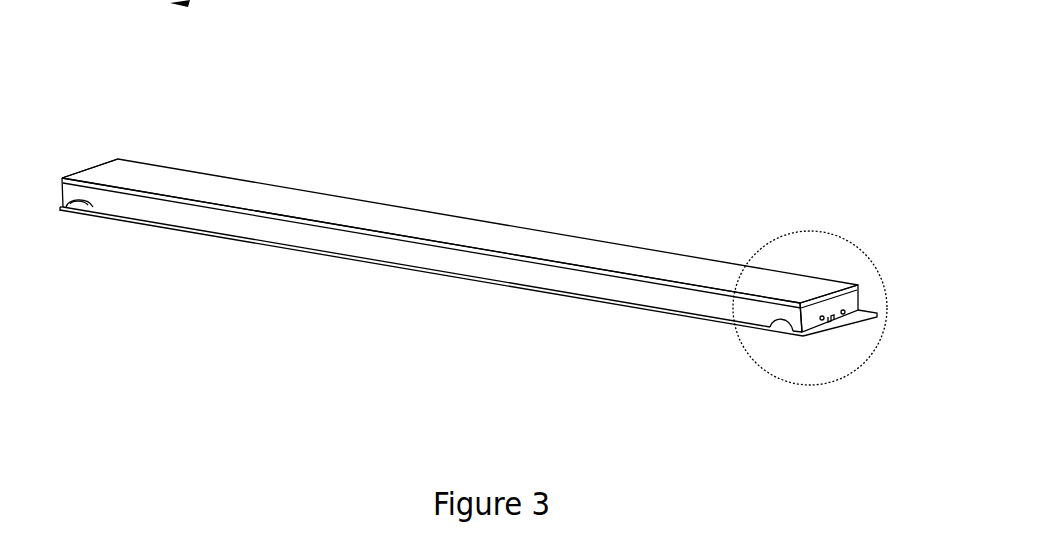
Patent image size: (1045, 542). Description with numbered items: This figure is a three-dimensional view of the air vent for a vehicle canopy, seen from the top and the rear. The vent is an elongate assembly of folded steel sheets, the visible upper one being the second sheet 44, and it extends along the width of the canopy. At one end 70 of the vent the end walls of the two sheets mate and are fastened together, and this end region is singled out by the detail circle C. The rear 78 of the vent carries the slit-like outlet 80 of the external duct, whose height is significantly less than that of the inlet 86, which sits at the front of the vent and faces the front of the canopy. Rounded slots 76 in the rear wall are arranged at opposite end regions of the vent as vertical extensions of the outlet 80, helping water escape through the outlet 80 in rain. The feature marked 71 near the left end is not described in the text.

The second sheet 44 is at (116, 166).
The housing edge 71 is at (60, 150).
The rear 78 is at (349, 349).
The outlet 80 is at (486, 298).
The inlet 86 is at (880, 293).
The end 70 is at (892, 363).
The rounded slots 76 is at (71, 230).
The detail circle C is at (797, 230).